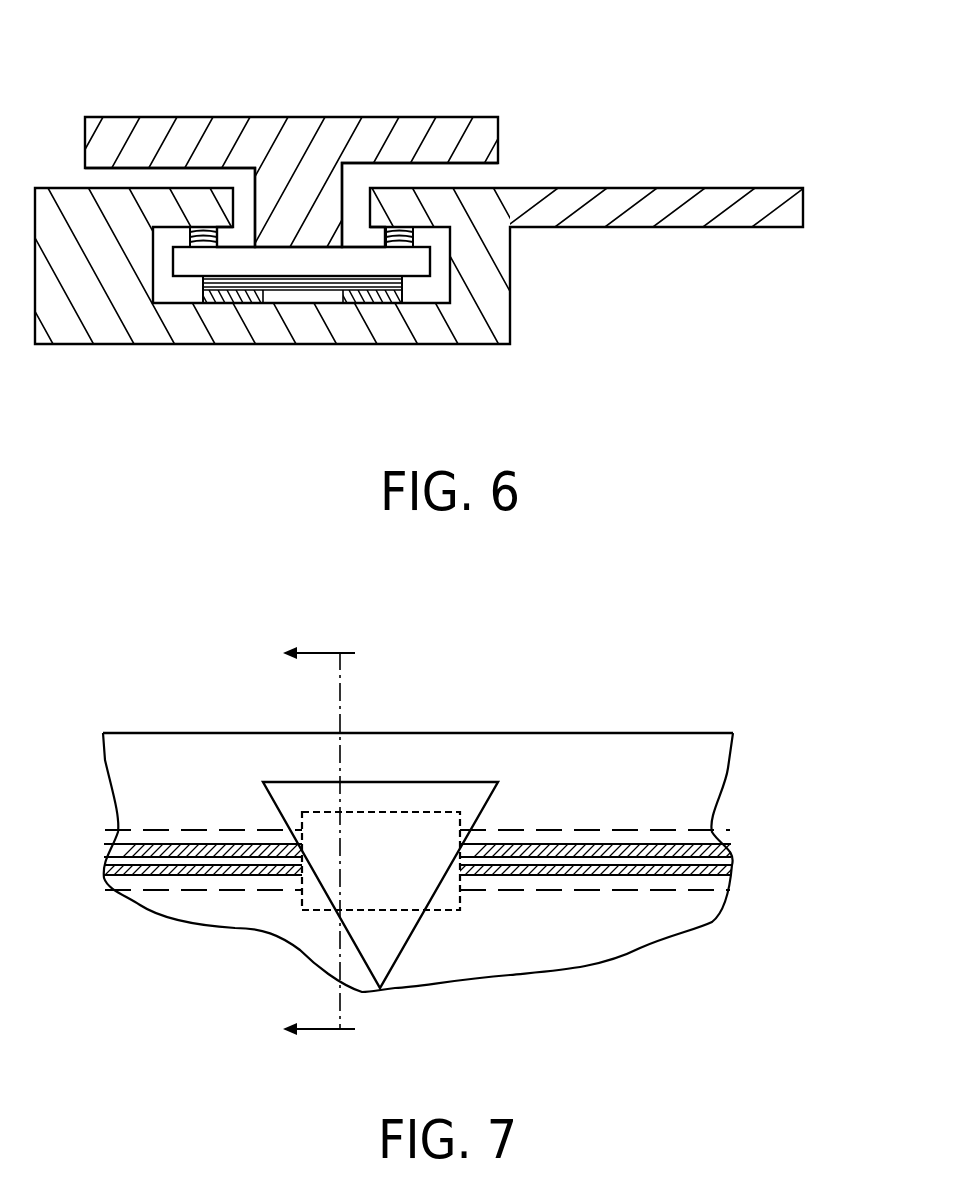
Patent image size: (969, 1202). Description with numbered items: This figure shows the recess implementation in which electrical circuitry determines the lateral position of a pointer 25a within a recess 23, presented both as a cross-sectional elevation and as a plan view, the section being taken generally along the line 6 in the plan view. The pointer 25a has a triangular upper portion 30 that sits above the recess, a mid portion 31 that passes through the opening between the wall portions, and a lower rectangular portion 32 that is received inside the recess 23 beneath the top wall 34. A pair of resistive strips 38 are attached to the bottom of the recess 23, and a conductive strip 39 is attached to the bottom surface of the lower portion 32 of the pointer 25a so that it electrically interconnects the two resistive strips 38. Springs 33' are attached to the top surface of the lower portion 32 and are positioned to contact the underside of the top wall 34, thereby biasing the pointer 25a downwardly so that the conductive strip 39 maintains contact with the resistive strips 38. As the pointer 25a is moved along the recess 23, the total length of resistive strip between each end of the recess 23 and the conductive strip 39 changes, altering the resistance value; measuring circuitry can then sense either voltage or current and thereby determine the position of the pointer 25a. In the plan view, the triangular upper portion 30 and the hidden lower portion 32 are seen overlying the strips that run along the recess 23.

In FIG. 7, the recess 23 is at (636, 836).
In FIG. 6, the pointer 25a is at (515, 99).
In FIG. 7, the pointer 25a is at (291, 772).
In FIG. 6, the triangular upper portion 30 is at (373, 140).
In FIG. 7, the triangular upper portion 30 is at (437, 792).
In FIG. 6, the mid portion 31 is at (294, 196).
In FIG. 6, the lower rectangular portion 32 is at (273, 255).
In FIG. 7, the lower rectangular portion 32 is at (309, 922).
In FIG. 6, the springs 33' is at (352, 180).
In FIG. 6, the top wall 34 is at (428, 204).
In FIG. 6, the resistive strips 38 is at (258, 292).
In FIG. 6, the conductive strip 39 is at (285, 284).
In FIG. 7, the line 6— 6 is at (331, 841).